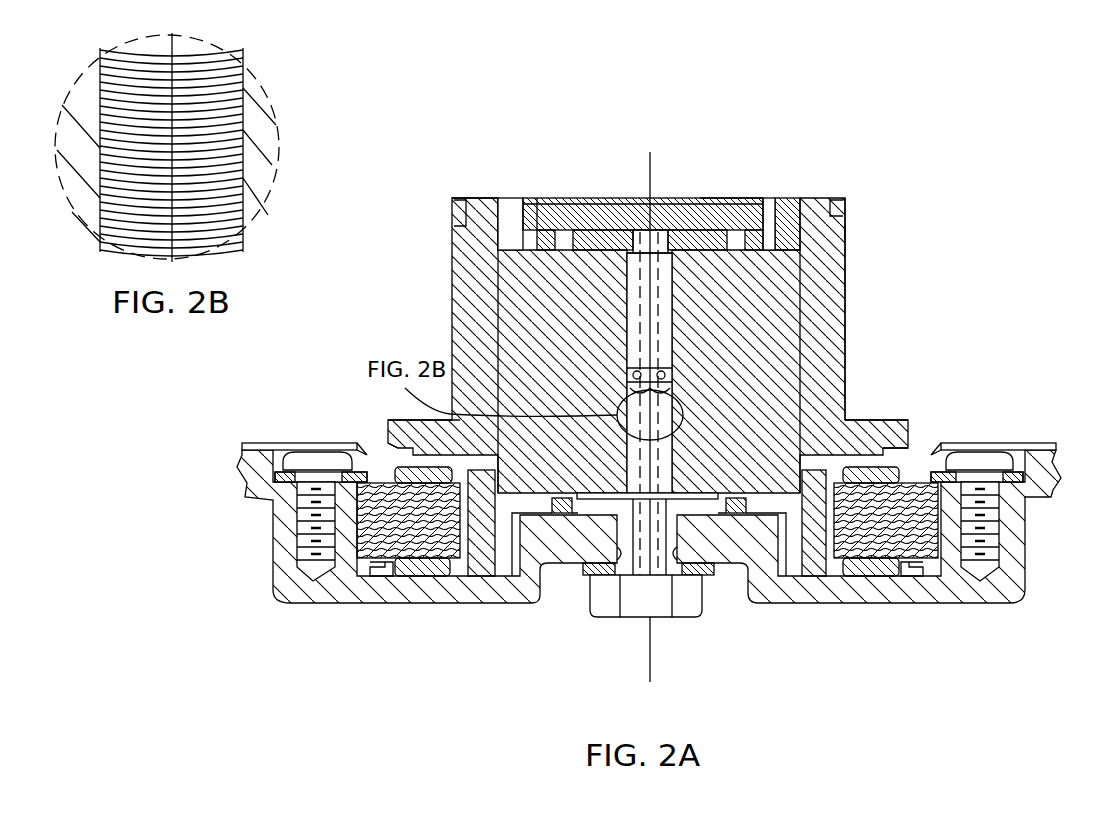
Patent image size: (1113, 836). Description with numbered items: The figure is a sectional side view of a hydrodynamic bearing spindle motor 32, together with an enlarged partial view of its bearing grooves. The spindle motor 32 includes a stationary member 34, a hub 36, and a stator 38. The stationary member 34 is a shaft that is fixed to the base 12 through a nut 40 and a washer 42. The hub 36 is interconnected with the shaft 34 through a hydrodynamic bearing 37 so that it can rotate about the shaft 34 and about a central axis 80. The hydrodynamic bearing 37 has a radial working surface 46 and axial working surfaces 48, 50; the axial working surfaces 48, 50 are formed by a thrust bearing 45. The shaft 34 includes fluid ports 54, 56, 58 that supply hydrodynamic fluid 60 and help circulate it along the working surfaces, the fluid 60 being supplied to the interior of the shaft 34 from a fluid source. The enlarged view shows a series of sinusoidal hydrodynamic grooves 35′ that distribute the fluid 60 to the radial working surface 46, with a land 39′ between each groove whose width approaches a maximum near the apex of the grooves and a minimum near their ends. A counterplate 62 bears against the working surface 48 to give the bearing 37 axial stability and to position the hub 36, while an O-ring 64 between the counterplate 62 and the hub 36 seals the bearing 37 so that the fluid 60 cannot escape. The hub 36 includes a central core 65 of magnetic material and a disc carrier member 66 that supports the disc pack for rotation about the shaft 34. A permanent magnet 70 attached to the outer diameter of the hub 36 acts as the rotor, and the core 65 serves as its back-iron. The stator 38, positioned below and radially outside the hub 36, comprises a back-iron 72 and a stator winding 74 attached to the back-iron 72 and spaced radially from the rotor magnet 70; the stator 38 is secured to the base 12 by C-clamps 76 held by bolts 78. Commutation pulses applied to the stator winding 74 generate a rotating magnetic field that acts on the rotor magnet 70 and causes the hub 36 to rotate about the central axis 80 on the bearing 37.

In FIG. 2A, the base 12 is at (448, 605).
In FIG. 2A, the spindle motor 32 is at (855, 118).
In FIG. 2A, the stationary member (shaft) 34 is at (681, 248).
In FIG. 2B, the sinusoidal hydrodynamic grooves 35′ is at (233, 153).
In FIG. 2A, the hub 36 is at (847, 215).
In FIG. 2A, the hydrodynamic bearing 37 is at (600, 290).
In FIG. 2A, the stator 38 is at (362, 448).
In FIG. 2B, the land 39′ is at (243, 70).
In FIG. 2A, the nut 40 is at (598, 618).
In FIG. 2A, the washer 42 is at (708, 578).
In FIG. 2A, the thrust bearing 45 is at (610, 230).
In FIG. 2A, the radial working surface 46 is at (668, 278).
In FIG. 2A, the axial working surface 48 is at (718, 199).
In FIG. 2A, the axial working surface 50 is at (790, 238).
In FIG. 2A, the fluid port 54 is at (626, 375).
In FIG. 2A, the fluid port 56 is at (672, 372).
In FIG. 2A, the fluid port 58 is at (662, 235).
In FIG. 2A, the hydrodynamic fluid 60 is at (590, 226).
In FIG. 2A, the counterplate 62 is at (548, 210).
In FIG. 2A, the O-ring 64 is at (495, 232).
In FIG. 2A, the central core 65 is at (832, 404).
In FIG. 2A, the disc carrier member 66 is at (847, 232).
In FIG. 2A, the permanent magnet (rotor magnet) 70 is at (808, 578).
In FIG. 2A, the back-iron 72 is at (366, 570).
In FIG. 2A, the stator winding 74 is at (415, 574).
In FIG. 2A, the C-clamp 76 is at (337, 442).
In FIG. 2A, the bolt 78 is at (282, 445).
In FIG. 2A, the central axis 80 is at (650, 153).